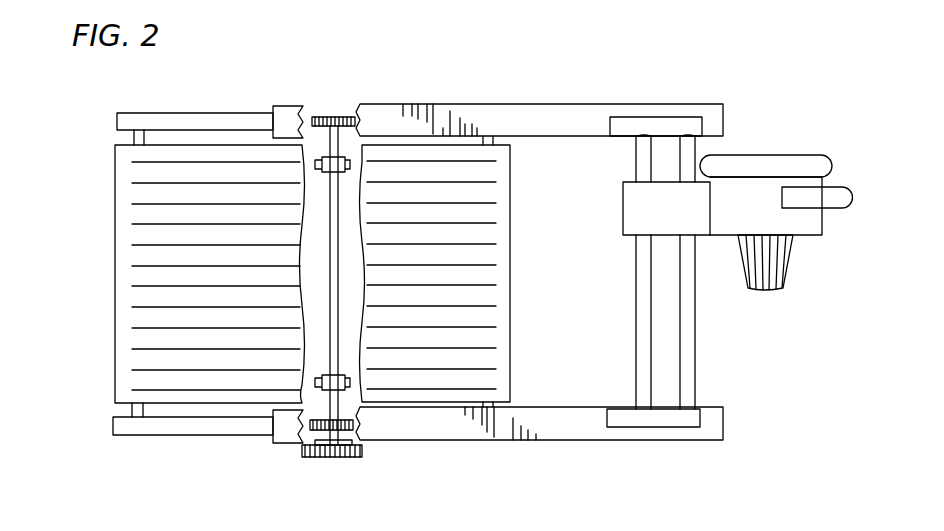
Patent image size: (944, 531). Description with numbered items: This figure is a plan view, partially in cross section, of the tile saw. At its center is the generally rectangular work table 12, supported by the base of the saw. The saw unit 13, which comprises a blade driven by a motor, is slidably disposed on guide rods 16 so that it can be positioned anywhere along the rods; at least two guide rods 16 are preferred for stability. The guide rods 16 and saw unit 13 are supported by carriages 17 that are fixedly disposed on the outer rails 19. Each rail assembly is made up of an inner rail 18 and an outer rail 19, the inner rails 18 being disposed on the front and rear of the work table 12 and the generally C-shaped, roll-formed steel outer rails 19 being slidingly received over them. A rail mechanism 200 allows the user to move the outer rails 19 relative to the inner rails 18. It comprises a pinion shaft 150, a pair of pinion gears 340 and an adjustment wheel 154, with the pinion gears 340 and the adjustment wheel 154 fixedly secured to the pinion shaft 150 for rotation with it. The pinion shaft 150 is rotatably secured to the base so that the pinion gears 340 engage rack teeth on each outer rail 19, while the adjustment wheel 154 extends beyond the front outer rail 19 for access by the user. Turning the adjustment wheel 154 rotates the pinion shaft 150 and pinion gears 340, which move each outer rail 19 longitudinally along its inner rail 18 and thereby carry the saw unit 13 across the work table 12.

The work table 12 is at (130, 280).
The saw unit 13 is at (797, 257).
The guide rods 16 is at (683, 158).
The carriages 17 is at (665, 125).
The inner rail 18 is at (204, 428).
The outer rail 19 is at (560, 430).
The pinion shaft 150 is at (330, 196).
The adjustment wheel 154 is at (310, 458).
The rail mechanism 200 is at (331, 294).
The pinion gears 340 is at (331, 116).